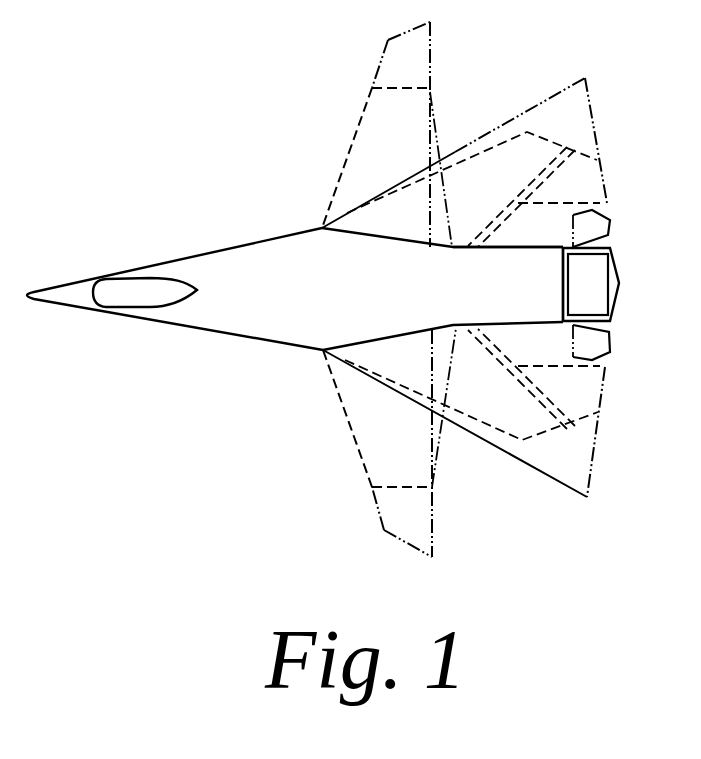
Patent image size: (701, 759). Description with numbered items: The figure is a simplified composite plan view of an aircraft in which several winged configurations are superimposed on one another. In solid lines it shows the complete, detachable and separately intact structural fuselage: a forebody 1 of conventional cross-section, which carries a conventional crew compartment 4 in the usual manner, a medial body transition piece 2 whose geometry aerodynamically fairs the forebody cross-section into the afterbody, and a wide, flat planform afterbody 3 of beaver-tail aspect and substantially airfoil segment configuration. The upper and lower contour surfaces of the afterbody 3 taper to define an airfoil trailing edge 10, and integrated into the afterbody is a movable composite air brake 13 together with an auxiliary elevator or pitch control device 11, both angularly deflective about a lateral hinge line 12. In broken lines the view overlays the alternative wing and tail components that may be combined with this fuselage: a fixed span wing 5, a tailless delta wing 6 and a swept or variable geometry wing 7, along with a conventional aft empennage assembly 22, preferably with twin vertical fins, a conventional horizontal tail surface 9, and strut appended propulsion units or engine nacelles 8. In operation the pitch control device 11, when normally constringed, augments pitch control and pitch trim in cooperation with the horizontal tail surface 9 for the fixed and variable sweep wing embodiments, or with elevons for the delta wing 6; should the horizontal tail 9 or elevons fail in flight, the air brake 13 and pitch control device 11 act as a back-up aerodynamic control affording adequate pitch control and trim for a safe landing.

The forebody 1 is at (117, 238).
The medial body transition piece 2 is at (398, 232).
The afterbody 3 is at (542, 333).
The crew compartment 4 is at (118, 306).
The fixed span wing 5 is at (377, 457).
The delta wing 6 is at (584, 472).
The swept or variable geometry wing 7 is at (383, 519).
The propulsion unit 8 is at (610, 337).
The horizontal tail surface 9 is at (605, 388).
The airfoil trailing edge 10 is at (621, 285).
The auxiliary elevator or pitch control device 11 is at (551, 282).
The lateral hinge line 12 is at (560, 306).
The composite air brake 13 is at (605, 274).
The aft empennage assembly 22 is at (610, 208).